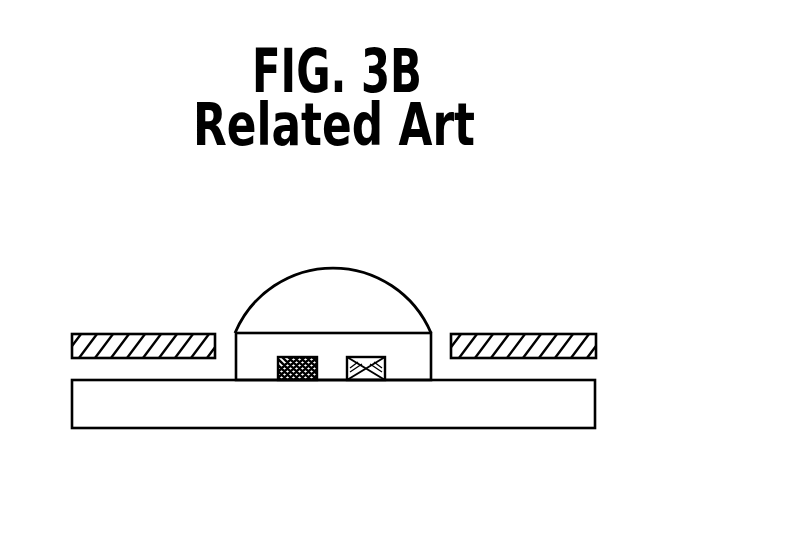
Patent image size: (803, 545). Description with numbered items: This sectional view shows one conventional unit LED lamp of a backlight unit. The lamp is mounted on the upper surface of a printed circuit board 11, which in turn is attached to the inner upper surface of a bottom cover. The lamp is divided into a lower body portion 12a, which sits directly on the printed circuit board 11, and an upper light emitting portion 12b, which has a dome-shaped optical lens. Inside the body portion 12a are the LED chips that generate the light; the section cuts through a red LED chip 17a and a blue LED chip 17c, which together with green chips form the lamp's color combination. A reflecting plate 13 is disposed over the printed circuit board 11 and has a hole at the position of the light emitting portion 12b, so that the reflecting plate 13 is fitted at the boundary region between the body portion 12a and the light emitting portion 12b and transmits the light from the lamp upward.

The printed circuit board 11 is at (583, 400).
The reflecting plate 13 is at (583, 346).
The body portion 12a is at (255, 370).
The light emitting portion 12b is at (333, 282).
The red LED chip 17a is at (305, 381).
The blue LED chip 17c is at (372, 381).